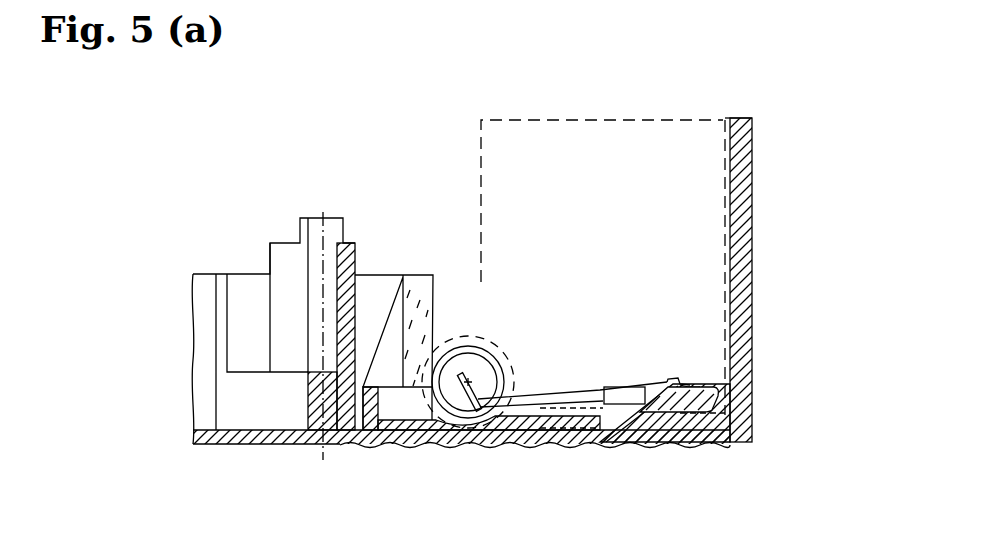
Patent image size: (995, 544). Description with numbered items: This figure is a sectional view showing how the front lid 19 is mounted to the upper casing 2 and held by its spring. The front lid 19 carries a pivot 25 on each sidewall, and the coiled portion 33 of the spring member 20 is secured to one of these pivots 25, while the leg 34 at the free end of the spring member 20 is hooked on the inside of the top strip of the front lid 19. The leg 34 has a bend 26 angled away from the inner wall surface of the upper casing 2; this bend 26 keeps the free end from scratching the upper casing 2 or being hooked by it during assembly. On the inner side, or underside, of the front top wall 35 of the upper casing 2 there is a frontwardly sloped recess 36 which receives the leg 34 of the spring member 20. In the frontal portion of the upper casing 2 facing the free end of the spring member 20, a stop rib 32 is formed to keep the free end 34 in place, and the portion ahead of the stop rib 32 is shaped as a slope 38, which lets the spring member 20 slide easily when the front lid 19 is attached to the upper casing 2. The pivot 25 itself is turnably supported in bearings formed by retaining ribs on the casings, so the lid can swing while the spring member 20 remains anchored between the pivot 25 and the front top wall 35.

The upper casing 2 is at (270, 452).
The front lid 19 is at (776, 203).
The spring member 20 is at (501, 431).
The pivot 25 is at (487, 366).
The bend 26 is at (673, 385).
The stop rib 32 is at (684, 380).
The coiled portion 33 is at (458, 346).
The leg at the free end of the spring member 34 is at (592, 388).
The front top wall 35 is at (580, 443).
The frontwardly sloped recess 36 is at (612, 387).
The slope 38 is at (693, 385).